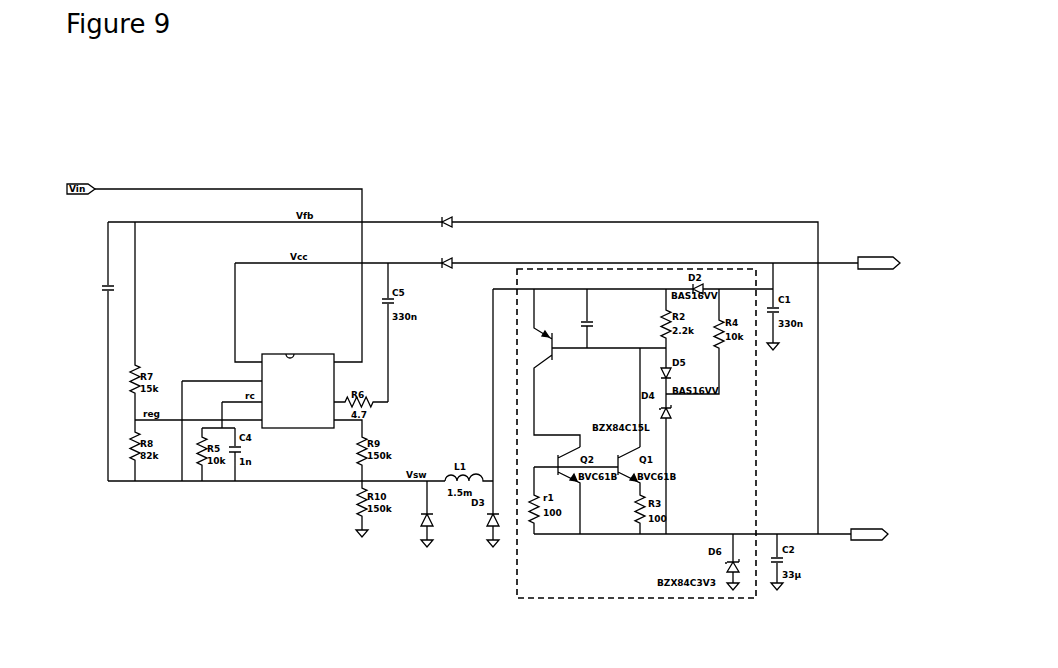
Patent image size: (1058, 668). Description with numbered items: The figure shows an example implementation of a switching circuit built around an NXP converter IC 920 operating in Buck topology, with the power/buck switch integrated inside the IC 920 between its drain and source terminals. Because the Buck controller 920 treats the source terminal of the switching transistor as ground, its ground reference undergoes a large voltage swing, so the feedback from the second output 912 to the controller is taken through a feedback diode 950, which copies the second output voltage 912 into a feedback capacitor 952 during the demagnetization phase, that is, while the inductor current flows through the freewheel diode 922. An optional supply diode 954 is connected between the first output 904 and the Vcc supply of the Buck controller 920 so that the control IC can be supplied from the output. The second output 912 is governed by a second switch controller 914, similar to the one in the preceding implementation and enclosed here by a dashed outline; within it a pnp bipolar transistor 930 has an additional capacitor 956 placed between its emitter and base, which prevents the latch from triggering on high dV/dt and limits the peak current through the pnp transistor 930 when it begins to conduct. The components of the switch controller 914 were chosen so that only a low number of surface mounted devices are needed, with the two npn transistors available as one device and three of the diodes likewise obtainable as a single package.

The first output 904 is at (878, 255).
The second output 912 is at (863, 541).
The second switch controller 914 is at (756, 388).
The TEA1520 IC 920 is at (290, 428).
The diode D1 922 is at (421, 527).
The pnp BJT Q3 930 is at (541, 327).
The diode D8 950 is at (441, 220).
The capacitor C6 952 is at (103, 290).
The diode D7 954 is at (450, 258).
The capacitor C3 956 is at (586, 305).